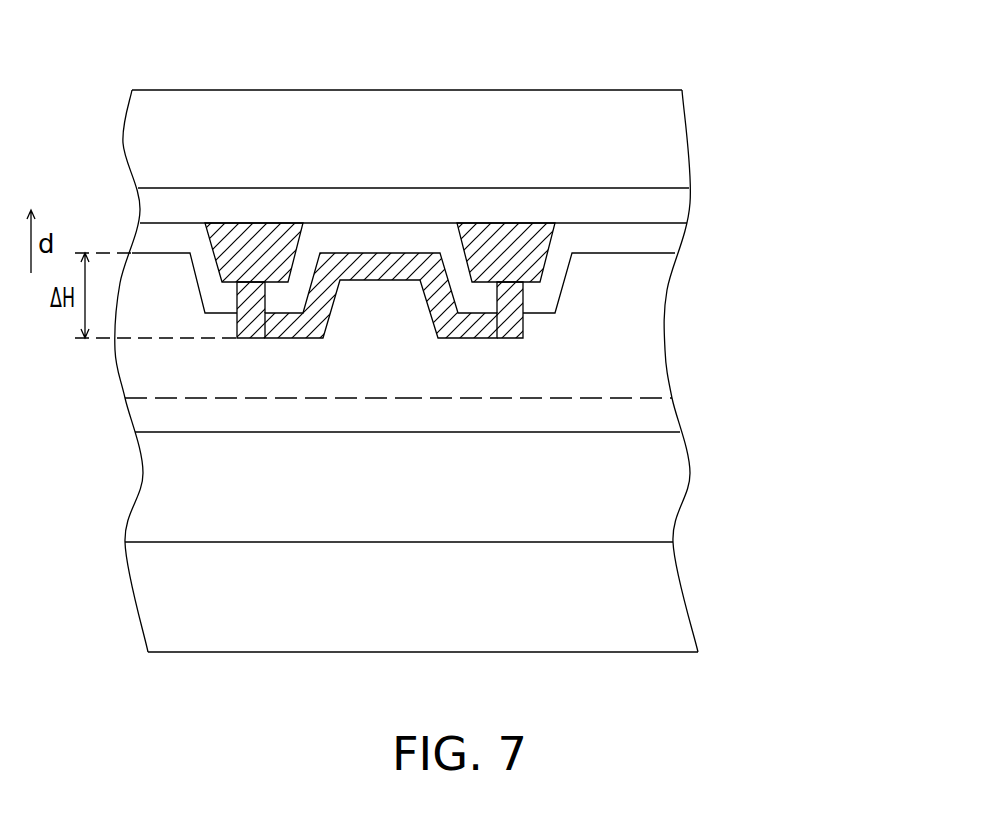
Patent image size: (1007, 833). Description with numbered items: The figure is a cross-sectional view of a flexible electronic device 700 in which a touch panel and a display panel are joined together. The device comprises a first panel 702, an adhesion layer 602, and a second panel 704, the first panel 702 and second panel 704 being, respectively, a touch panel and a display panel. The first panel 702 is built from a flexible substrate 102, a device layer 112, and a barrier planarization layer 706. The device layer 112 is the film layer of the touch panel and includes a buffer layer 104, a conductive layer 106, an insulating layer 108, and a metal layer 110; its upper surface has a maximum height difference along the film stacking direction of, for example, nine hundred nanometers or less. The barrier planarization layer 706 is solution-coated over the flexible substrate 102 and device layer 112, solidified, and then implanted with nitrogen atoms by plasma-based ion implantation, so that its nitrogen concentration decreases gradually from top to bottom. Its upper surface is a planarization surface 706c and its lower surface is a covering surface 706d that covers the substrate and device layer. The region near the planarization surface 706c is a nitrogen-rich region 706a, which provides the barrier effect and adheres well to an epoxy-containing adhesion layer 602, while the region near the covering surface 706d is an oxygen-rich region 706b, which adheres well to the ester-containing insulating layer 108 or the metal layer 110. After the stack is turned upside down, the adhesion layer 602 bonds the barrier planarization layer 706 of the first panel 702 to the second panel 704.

The flexible electronic device 700 is at (110, 58).
The first panel 702 is at (820, 107).
The flexible substrate 102 is at (658, 130).
The buffer layer 104 is at (680, 205).
The conductive layer 106 is at (555, 237).
The insulating layer 108 is at (473, 298).
The metal layer 110 is at (523, 328).
The device layer 112 is at (753, 195).
The barrier planarization layer 706 is at (760, 370).
The nitrogen-rich region 706a is at (662, 418).
The oxygen-rich region 706b is at (650, 370).
The planarization surface 706c is at (626, 446).
The covering surface 706d is at (499, 351).
The adhesion layer 602 is at (665, 492).
The second panel 704 is at (665, 601).